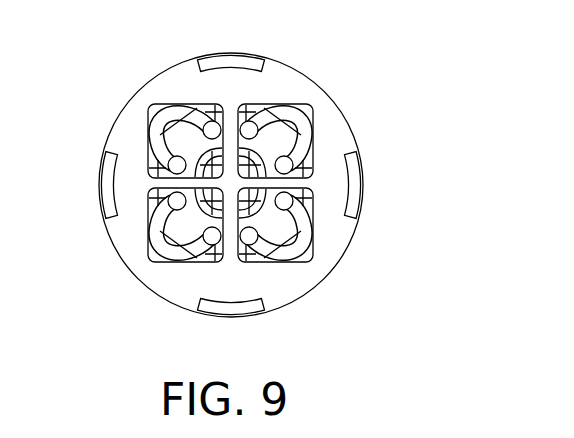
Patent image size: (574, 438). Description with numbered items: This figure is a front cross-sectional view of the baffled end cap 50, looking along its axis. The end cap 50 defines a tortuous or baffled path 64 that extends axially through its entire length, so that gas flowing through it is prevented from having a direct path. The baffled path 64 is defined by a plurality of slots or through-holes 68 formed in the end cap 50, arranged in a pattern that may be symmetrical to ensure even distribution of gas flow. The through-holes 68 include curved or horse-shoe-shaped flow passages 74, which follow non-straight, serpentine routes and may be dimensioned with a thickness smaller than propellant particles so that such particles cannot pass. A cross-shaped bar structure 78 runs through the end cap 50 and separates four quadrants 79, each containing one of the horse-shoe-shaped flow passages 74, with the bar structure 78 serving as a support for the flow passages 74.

The end cap 50 is at (343, 190).
The baffled path 64 is at (307, 108).
The through-holes 68 is at (285, 203).
The flow passages 74 is at (163, 266).
The bar structure 78 is at (245, 232).
The quadrants 79 is at (198, 212).